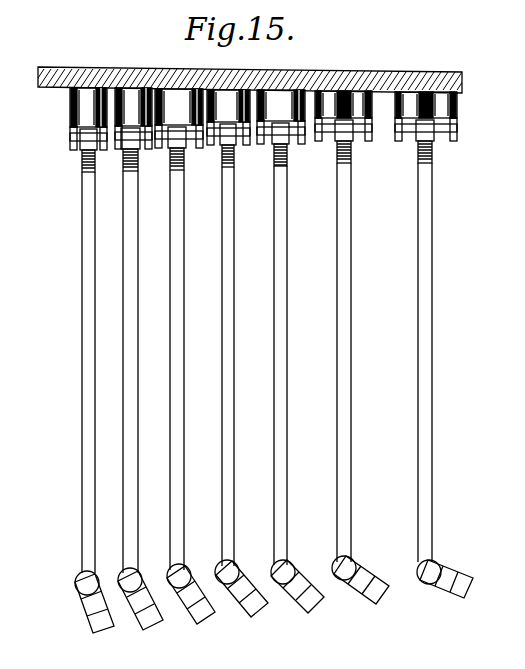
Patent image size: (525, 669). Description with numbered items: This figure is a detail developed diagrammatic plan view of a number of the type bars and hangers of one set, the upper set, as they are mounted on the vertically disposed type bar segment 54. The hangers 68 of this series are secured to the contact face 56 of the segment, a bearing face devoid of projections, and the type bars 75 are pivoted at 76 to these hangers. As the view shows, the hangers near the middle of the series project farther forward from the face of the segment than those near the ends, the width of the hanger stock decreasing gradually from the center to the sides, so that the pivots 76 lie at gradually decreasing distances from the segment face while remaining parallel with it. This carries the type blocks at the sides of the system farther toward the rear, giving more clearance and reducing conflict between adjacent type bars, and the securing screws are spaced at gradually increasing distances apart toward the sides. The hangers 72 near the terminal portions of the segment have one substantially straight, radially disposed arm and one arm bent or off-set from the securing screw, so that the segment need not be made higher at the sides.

The type bar segment 54 is at (137, 62).
The contact face 56 is at (284, 110).
The hanger 68 is at (150, 88).
The hanger 72 is at (374, 104).
The type bar 75 is at (123, 309).
The pivot 76 is at (73, 145).